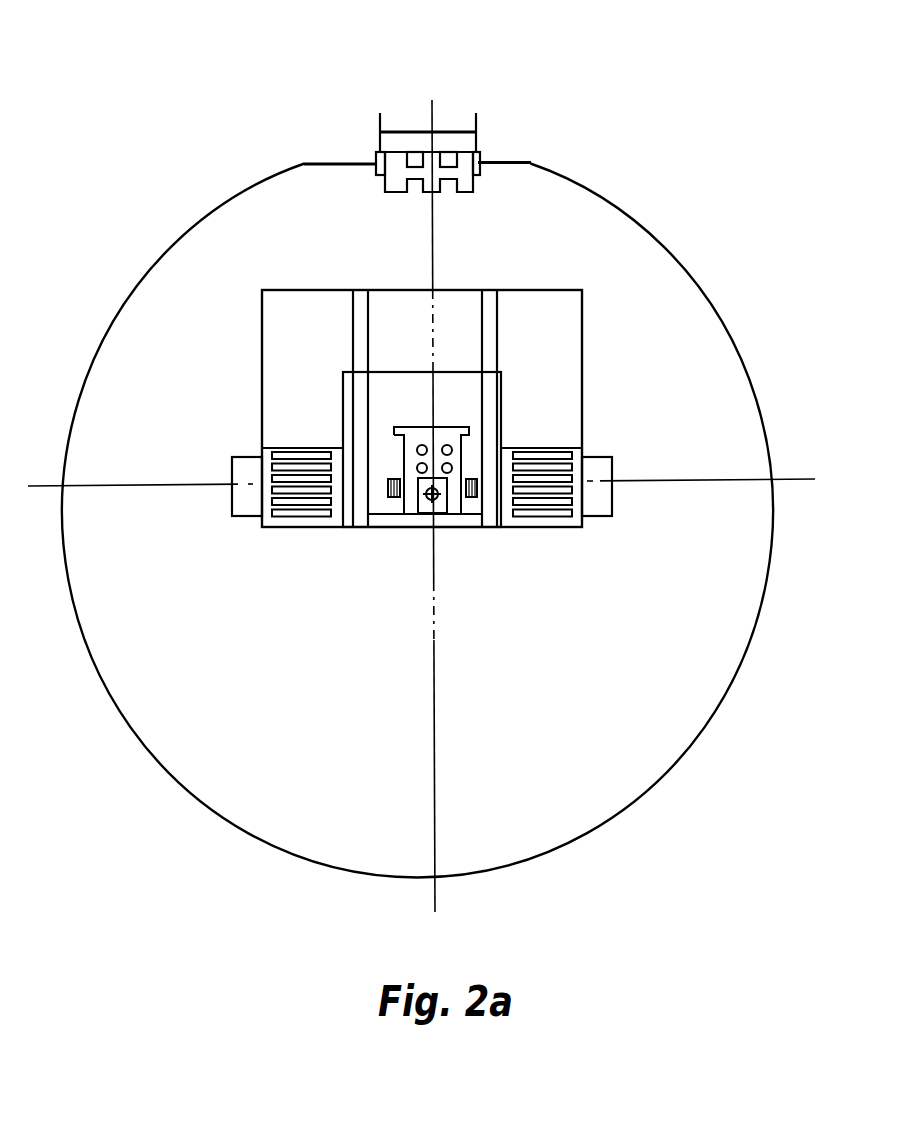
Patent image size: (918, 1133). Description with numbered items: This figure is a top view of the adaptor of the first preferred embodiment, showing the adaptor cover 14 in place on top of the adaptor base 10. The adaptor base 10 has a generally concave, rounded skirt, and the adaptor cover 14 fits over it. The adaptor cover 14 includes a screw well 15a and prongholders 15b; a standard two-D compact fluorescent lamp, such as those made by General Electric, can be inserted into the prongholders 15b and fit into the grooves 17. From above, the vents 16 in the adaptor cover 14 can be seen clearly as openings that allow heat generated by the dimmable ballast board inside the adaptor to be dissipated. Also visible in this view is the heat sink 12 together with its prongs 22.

The adaptor base 10 is at (768, 573).
The heat sink 12 is at (480, 162).
The adaptor cover 14 is at (259, 326).
The screw well 15a is at (436, 500).
The prongholders 15b is at (443, 433).
The vents 16 is at (268, 448).
The grooves 17 is at (369, 290).
The prongs 22 is at (476, 117).